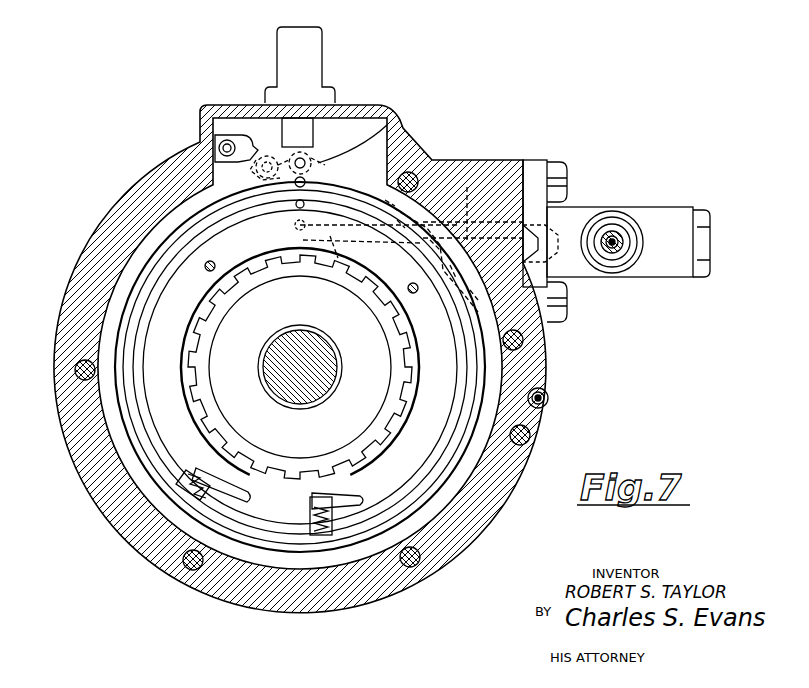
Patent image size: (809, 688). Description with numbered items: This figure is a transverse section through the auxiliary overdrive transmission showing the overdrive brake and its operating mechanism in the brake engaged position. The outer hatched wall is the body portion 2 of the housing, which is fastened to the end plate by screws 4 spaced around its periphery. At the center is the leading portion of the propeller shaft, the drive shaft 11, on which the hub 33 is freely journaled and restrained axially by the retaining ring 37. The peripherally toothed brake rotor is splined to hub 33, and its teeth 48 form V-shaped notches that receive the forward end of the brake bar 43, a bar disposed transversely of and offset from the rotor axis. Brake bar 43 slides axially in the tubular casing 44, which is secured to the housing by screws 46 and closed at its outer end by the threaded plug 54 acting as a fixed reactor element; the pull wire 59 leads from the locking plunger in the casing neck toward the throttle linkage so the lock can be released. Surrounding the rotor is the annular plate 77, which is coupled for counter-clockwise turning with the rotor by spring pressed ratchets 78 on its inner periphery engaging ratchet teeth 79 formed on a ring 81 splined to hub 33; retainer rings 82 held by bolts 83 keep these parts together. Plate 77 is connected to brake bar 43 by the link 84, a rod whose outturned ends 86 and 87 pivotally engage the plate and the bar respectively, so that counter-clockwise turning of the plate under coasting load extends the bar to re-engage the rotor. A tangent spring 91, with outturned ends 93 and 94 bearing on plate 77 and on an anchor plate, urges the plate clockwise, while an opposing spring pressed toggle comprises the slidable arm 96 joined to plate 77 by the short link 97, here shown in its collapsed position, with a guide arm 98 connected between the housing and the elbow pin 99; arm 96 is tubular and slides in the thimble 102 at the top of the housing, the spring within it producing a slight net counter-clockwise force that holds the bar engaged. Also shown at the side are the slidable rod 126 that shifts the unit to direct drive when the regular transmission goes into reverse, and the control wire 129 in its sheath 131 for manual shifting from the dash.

The body portion 2 is at (122, 218).
The screws 4 is at (412, 177).
The drive shaft 11 is at (300, 400).
The hub 33 is at (227, 335).
The retaining ring 37 is at (343, 368).
The brake bar 43 is at (509, 222).
The tubular casing 44 is at (662, 214).
The screws 46 is at (560, 172).
The teeth 48 is at (463, 321).
The plug 54 is at (712, 248).
The pull wire 59 is at (612, 238).
The annular plate 77 is at (363, 177).
The spring pressed ratchets 78 is at (362, 499).
The ratchet teeth 79 is at (268, 502).
The ring 81 is at (345, 472).
The retainer rings 82 is at (175, 403).
The bolts 83 is at (209, 271).
The link 84 is at (372, 244).
The outturned end 86 is at (376, 240).
The outturned end 87 is at (477, 201).
The tangent spring 91 is at (158, 497).
The outturned end 93 is at (299, 187).
The outturned end 94 is at (298, 207).
The slidable arm 96 is at (314, 130).
The short link 97 is at (262, 183).
The guide arm 98 is at (246, 152).
The elbow pin 99 is at (313, 158).
The thimble 102 is at (313, 45).
The slidable rod 126 is at (533, 437).
The control wire 129 is at (549, 399).
The sheath 131 is at (545, 393).